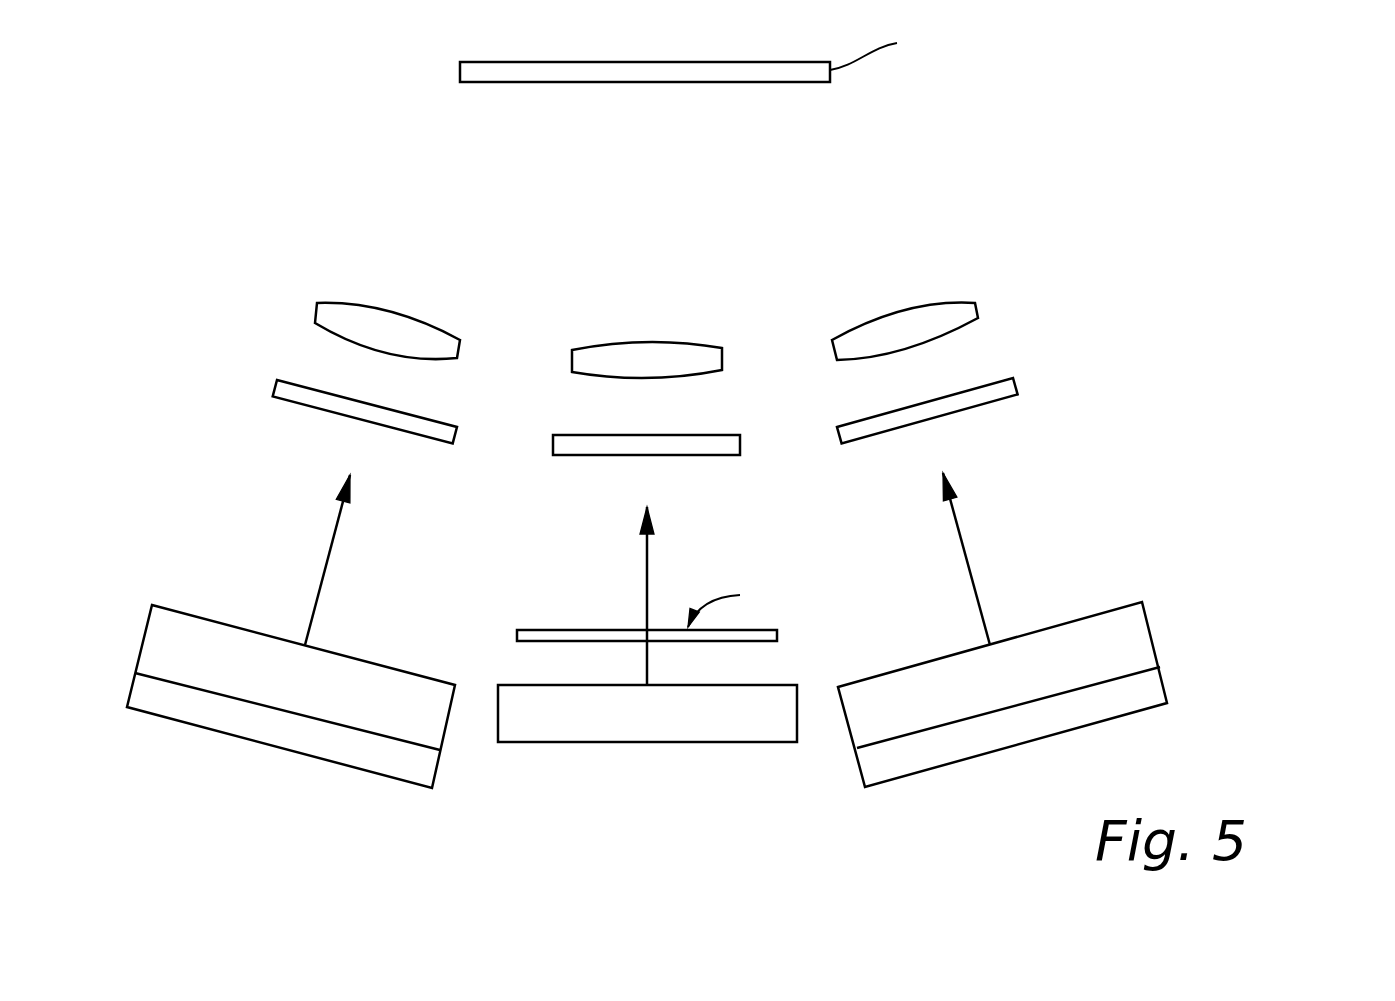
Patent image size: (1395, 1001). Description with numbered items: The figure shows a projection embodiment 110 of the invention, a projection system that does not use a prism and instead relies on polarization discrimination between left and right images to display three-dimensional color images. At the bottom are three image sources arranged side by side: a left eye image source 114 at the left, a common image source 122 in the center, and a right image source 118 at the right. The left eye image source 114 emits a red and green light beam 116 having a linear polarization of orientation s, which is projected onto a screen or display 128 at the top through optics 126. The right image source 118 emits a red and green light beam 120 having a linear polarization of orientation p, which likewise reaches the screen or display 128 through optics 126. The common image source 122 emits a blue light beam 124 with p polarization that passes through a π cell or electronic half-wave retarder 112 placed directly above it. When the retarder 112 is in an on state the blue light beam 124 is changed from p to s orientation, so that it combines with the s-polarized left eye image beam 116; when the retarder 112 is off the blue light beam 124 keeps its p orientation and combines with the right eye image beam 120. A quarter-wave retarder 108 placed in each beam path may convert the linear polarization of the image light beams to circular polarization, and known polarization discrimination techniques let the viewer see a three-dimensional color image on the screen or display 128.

The projection system embodiment 110 is at (1132, 498).
The screen or display 128 is at (460, 70).
The optics 126 is at (317, 313).
The quarter-wave retarder 108 is at (276, 388).
The red and green light beam 116 is at (322, 588).
The left eye image source 114 is at (147, 632).
The blue light beam 124 is at (647, 565).
The π cell or electronic half-wave retarder 112 is at (728, 642).
The common image source 122 is at (585, 742).
The red and green light beam 120 is at (973, 573).
The right image source 118 is at (1153, 635).